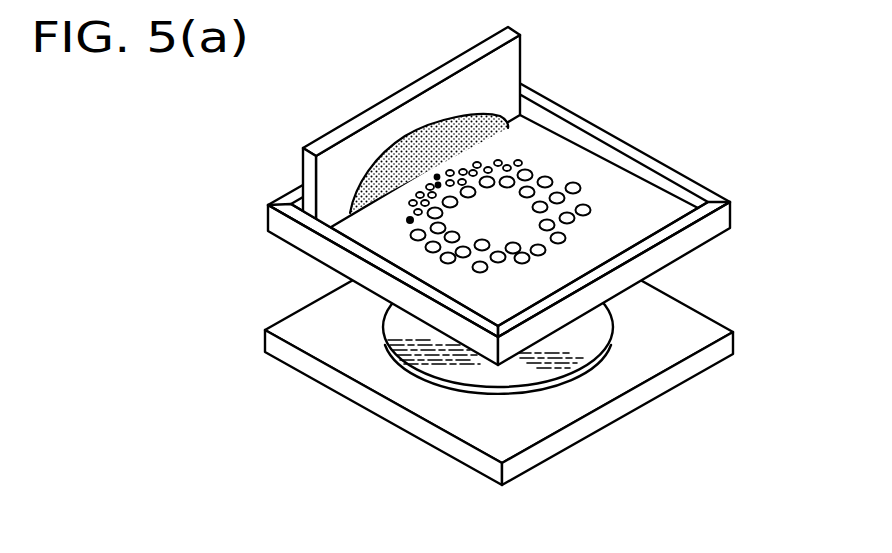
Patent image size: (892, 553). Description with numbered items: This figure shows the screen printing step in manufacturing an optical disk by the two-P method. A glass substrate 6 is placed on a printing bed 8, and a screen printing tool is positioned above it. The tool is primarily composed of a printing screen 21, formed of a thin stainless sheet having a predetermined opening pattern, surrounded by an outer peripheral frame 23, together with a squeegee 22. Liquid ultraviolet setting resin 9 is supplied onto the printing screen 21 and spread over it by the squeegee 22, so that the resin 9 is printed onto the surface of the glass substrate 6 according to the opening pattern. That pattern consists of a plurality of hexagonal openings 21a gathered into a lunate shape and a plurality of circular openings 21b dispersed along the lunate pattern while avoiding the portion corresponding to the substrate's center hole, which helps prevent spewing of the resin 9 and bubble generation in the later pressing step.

The glass substrate 6 is at (404, 367).
The printing bed 8 is at (612, 385).
The ultraviolet setting resin 9 is at (447, 147).
The printing screen 21 is at (643, 223).
The hexagonal openings 21a is at (407, 220).
The circular openings 21b is at (547, 175).
The squeegee 22 is at (402, 123).
The outer peripheral frame 23 is at (553, 118).